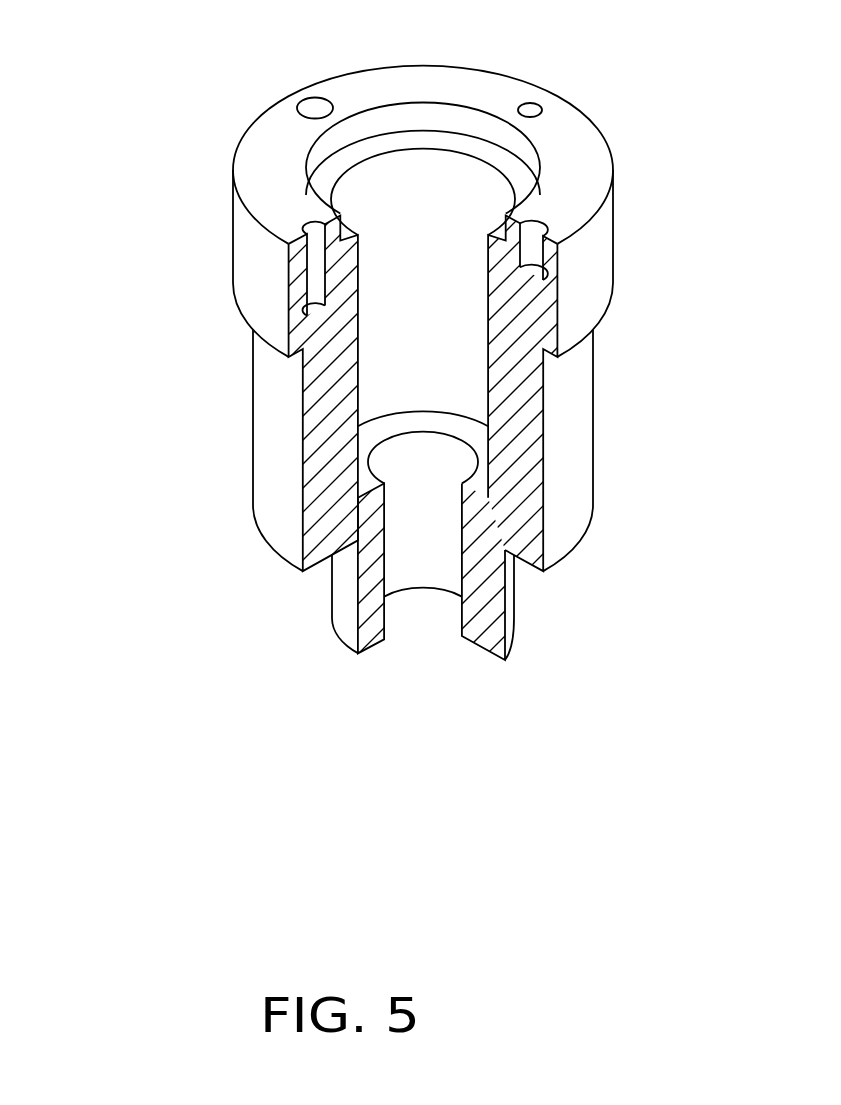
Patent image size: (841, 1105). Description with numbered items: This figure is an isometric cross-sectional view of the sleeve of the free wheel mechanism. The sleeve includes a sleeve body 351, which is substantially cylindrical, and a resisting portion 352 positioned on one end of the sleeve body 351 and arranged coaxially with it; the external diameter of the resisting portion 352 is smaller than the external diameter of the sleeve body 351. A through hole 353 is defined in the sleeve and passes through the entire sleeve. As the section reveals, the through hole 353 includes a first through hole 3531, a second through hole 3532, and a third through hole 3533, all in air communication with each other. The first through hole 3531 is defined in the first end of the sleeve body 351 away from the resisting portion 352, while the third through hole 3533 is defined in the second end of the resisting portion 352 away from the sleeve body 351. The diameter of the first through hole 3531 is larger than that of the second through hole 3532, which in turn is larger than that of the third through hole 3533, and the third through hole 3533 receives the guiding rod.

The through hole 353 is at (420, 351).
The first through hole 3531 is at (415, 133).
The second through hole 3532 is at (405, 352).
The third through hole 3533 is at (307, 567).
The sleeve body 351 is at (573, 440).
The resisting portion 352 is at (508, 590).